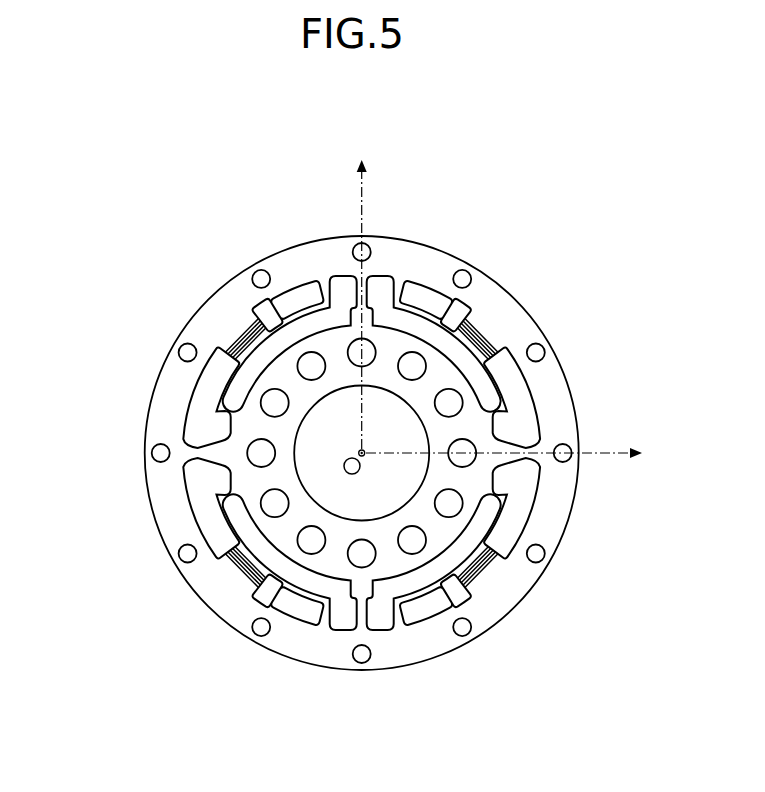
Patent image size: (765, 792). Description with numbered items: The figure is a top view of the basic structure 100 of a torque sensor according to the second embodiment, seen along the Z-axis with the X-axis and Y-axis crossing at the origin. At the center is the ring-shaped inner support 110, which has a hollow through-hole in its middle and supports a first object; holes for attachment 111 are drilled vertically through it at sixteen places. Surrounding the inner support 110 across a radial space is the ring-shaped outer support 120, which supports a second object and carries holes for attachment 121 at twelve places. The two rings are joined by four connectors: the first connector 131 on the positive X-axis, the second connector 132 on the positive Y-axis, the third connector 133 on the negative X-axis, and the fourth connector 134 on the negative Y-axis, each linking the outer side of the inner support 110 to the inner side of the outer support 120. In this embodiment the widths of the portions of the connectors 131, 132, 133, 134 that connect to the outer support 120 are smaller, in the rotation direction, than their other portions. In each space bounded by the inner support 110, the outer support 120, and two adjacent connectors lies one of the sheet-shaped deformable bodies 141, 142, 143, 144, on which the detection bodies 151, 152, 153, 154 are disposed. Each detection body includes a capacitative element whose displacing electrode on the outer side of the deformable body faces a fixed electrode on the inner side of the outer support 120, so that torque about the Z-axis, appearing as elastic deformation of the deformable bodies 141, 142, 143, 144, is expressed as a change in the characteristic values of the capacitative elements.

The basic structure 100 is at (541, 150).
The inner support 110 is at (391, 521).
The holes for attachment 111 is at (320, 381).
The outer support 120 is at (547, 399).
The holes for attachment 121 is at (177, 348).
The first connector 131 is at (520, 455).
The second connector 132 is at (363, 307).
The third connector 133 is at (212, 453).
The fourth connector 134 is at (361, 604).
The deformable body 141 is at (427, 317).
The deformable body 142 is at (282, 308).
The deformable body 143 is at (230, 528).
The deformable body 144 is at (430, 592).
The detection body 151 is at (483, 333).
The detection body 152 is at (248, 333).
The detection body 153 is at (244, 572).
The detection body 154 is at (484, 578).